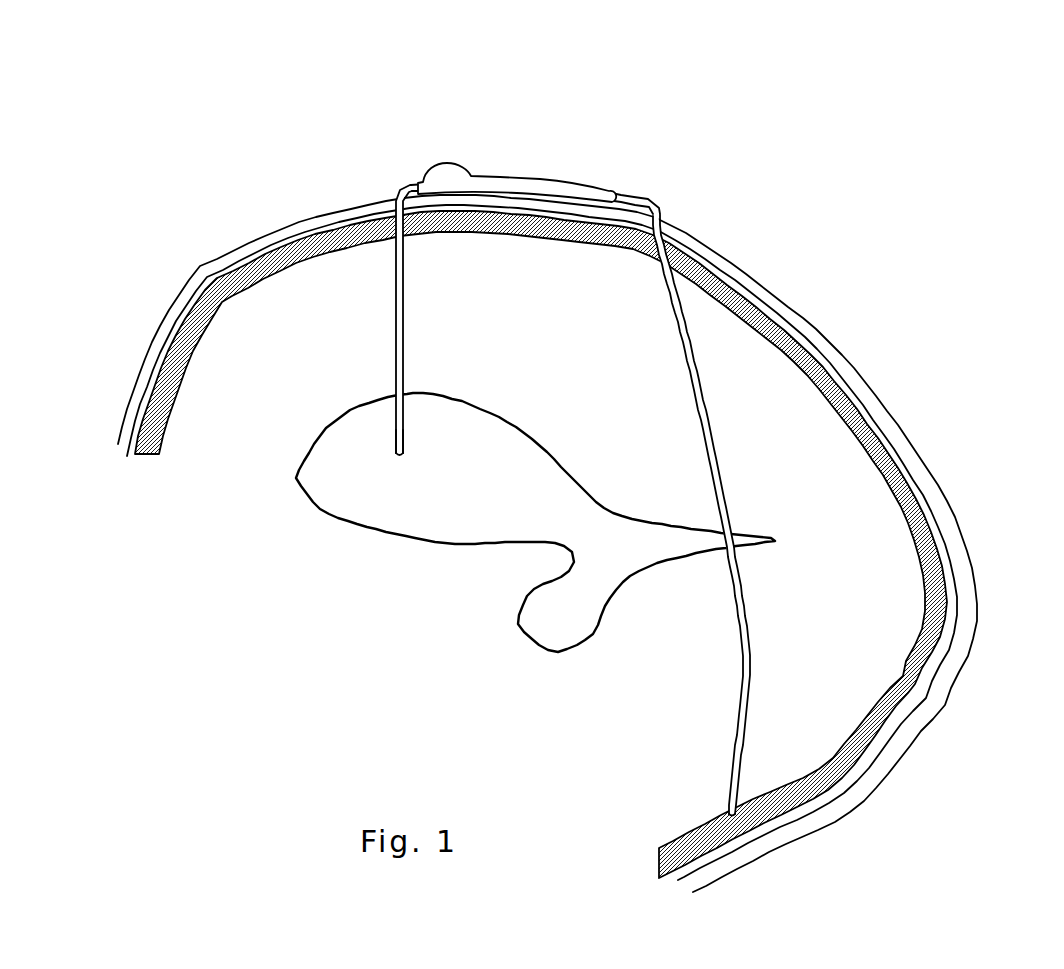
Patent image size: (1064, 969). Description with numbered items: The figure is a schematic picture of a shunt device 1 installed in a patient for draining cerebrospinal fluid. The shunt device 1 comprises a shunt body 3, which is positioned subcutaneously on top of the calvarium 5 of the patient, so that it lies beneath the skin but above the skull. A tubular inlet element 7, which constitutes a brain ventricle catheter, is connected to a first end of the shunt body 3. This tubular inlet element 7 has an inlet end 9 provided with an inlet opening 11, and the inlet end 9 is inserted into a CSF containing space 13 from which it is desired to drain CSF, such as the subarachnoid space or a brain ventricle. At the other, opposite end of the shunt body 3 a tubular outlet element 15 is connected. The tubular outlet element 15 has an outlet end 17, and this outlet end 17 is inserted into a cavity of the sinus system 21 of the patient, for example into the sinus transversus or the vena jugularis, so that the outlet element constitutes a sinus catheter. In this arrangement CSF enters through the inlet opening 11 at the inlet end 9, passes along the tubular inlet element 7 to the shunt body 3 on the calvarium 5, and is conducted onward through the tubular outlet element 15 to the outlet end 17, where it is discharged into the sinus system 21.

The shunt device 1 is at (579, 421).
The shunt body 3 is at (540, 178).
The calvarium 5 is at (347, 200).
The tubular inlet element 7 is at (394, 330).
The inlet end 9 is at (395, 437).
The inlet opening 11 is at (400, 455).
The CSF containing space 13 is at (385, 508).
The tubular outlet element 15 is at (692, 372).
The outlet end 17 is at (730, 792).
The sinus system 21 is at (840, 738).